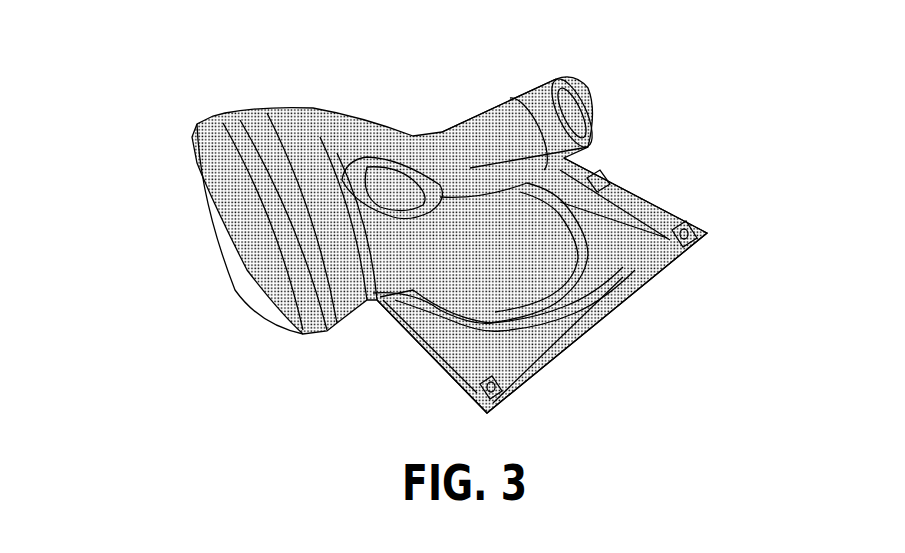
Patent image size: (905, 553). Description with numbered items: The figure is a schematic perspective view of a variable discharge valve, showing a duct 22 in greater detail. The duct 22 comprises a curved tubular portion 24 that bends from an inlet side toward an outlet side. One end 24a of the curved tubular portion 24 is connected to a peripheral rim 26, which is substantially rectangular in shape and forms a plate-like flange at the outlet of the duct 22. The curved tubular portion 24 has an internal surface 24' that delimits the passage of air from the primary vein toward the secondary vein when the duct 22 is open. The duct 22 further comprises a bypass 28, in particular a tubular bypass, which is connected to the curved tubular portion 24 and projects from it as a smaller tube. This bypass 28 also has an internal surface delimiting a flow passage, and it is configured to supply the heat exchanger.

The duct 22 is at (160, 96).
The curved tubular portion 24 is at (465, 166).
The internal surface 24' is at (241, 251).
The end 24a is at (643, 197).
The peripheral rim 26 is at (647, 273).
The bypass 28 is at (583, 88).